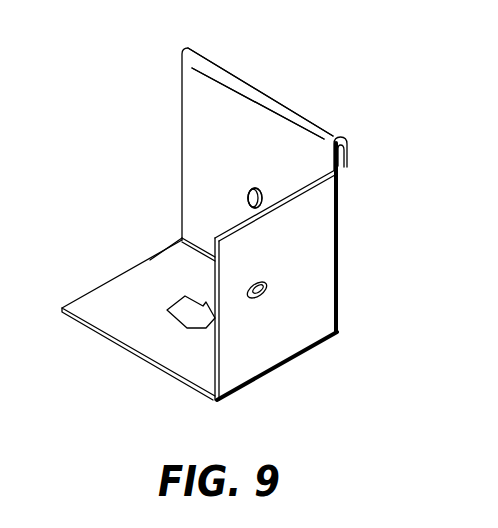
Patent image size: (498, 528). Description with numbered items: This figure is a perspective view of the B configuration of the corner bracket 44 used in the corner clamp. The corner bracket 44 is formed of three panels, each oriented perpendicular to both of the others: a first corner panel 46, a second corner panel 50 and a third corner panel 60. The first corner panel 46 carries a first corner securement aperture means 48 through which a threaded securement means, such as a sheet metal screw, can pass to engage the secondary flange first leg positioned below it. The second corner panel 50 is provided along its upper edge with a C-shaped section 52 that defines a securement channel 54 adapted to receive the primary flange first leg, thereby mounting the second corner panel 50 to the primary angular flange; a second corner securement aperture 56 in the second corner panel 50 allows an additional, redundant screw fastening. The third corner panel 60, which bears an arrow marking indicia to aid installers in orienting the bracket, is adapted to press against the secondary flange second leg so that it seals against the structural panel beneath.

The corner bracket 44 is at (340, 177).
The first corner panel 46 is at (320, 322).
The first corner securement aperture means 48 is at (258, 300).
The second corner panel 50 is at (236, 139).
The C-shaped section 52 is at (233, 73).
The securement channel 54 is at (347, 155).
The second corner securement aperture 56 is at (247, 197).
The third corner panel 60 is at (110, 310).